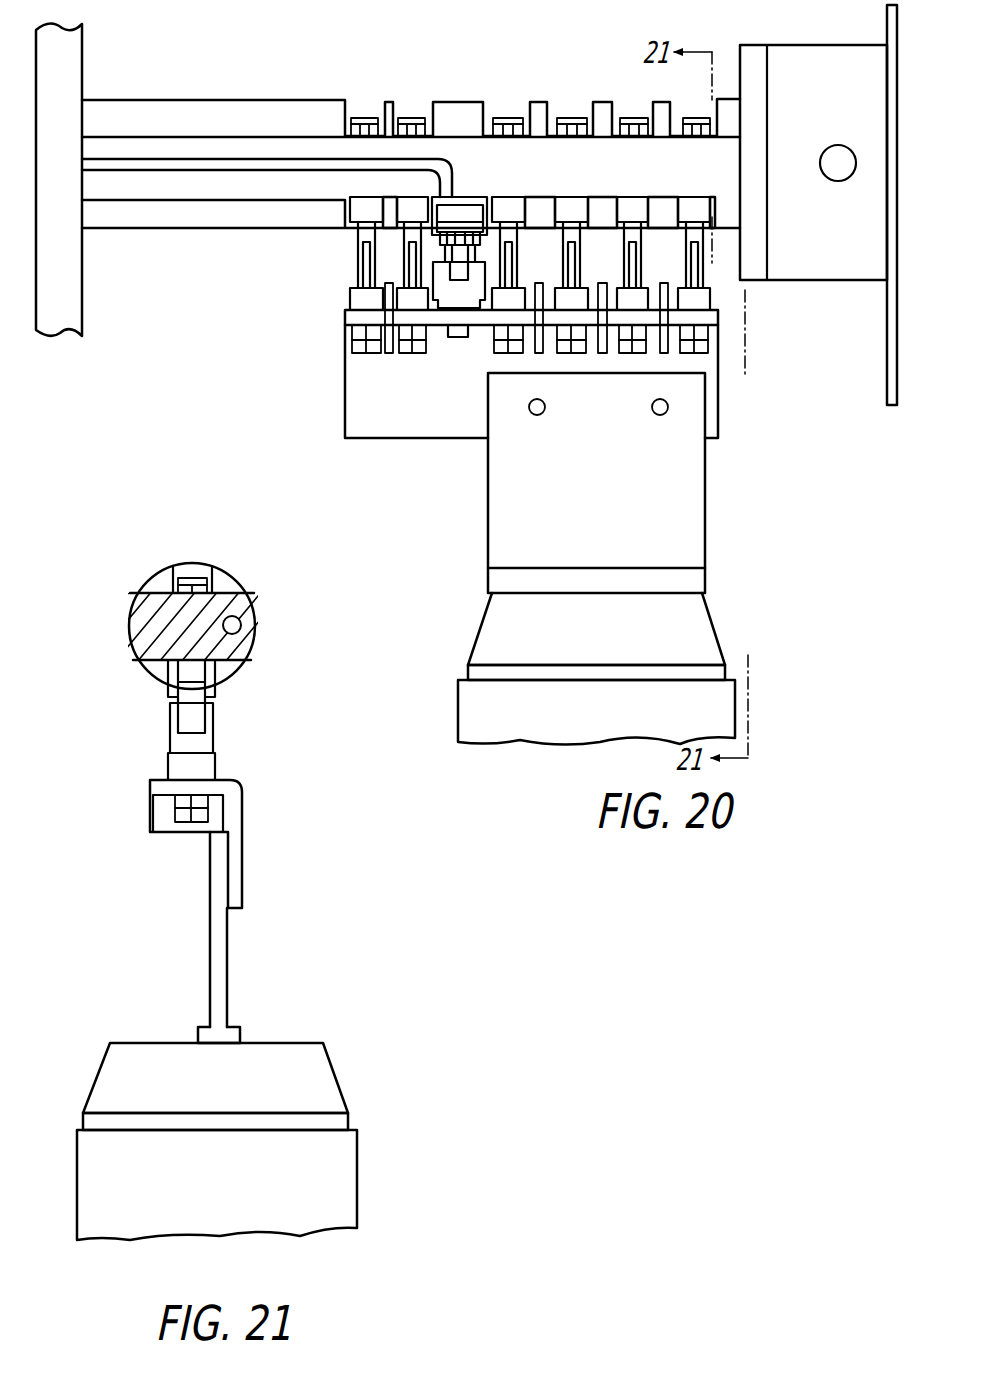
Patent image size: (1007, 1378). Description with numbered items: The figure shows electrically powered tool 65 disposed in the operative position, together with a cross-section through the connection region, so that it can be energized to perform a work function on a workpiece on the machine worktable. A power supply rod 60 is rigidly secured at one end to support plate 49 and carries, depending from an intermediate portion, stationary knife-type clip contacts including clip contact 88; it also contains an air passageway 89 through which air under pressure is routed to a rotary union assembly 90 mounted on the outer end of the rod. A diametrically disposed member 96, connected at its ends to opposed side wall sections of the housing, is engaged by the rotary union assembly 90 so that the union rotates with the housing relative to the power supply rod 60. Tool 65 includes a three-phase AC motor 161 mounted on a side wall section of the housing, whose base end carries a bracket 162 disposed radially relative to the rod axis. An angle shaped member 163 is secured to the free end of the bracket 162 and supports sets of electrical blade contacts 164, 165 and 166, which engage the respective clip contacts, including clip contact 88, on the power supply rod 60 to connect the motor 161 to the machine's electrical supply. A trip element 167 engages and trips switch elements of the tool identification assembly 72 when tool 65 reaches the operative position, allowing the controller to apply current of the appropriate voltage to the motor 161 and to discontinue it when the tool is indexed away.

In FIG. 20, the support plate 49 is at (83, 312).
In FIG. 20, the power supply rod 60 is at (462, 99).
In FIG. 21, the power supply rod 60 is at (240, 590).
In FIG. 20, the tool identification assembly 72 is at (460, 215).
In FIG. 21, the clip contact 88 is at (200, 745).
In FIG. 21, the air passageway 89 is at (243, 630).
In FIG. 20, the rotary union assembly 90 is at (830, 282).
In FIG. 20, the diametrically disposed member 96 is at (887, 365).
In FIG. 20, the electrically powered tool 65 is at (412, 497).
In FIG. 21, the electrically powered tool 65 is at (185, 1000).
In FIG. 20, the AC motor 161 is at (458, 705).
In FIG. 21, the AC motor 161 is at (357, 1140).
In FIG. 20, the bracket 162 is at (488, 537).
In FIG. 21, the bracket 162 is at (230, 965).
In FIG. 20, the angle shaped member 163 is at (345, 405).
In FIG. 21, the angle shaped member 163 is at (242, 845).
In FIG. 20, the electrical blade contacts 164 is at (410, 278).
In FIG. 20, the electrical blade contacts 165 is at (508, 272).
In FIG. 20, the electrical blade contacts 166 is at (690, 270).
In FIG. 21, the electrical blade contacts 166 is at (195, 705).
In FIG. 20, the trip element 167 is at (455, 306).